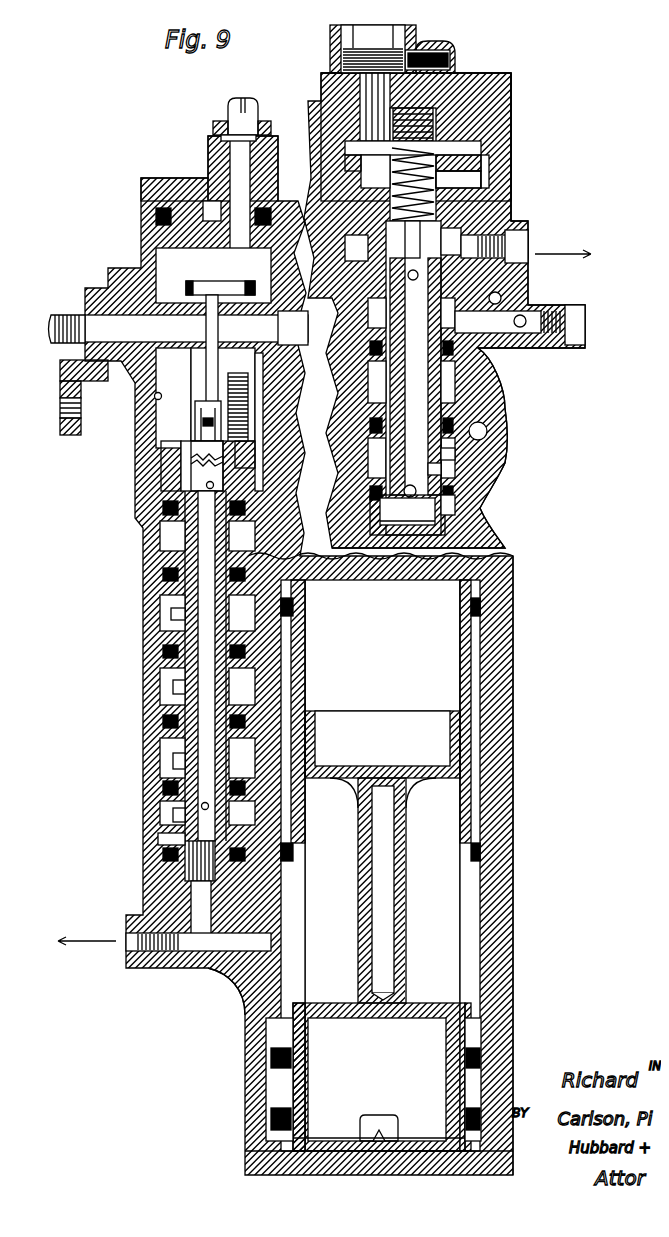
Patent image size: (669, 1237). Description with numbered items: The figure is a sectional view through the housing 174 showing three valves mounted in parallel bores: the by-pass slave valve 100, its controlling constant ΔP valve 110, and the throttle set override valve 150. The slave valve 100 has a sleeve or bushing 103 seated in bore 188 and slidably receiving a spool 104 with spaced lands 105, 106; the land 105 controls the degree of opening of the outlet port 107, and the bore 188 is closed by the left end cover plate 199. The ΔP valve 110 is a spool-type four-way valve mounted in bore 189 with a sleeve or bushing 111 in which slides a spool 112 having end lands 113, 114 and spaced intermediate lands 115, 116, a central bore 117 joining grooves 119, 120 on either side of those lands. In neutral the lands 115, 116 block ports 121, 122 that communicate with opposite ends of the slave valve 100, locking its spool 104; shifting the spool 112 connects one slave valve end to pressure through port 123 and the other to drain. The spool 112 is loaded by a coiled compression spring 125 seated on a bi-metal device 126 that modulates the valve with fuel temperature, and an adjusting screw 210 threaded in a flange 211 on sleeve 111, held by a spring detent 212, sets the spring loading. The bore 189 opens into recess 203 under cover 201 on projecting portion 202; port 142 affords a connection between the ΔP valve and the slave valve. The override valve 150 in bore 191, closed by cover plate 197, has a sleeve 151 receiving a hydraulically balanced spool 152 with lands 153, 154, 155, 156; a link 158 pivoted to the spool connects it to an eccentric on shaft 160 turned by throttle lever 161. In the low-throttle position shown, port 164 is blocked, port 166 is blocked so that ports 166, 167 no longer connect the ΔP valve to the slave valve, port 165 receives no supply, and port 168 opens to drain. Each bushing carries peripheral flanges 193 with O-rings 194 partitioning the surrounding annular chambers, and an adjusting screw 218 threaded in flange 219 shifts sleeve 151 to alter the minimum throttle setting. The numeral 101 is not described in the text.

The by-pass slave valve 100 is at (480, 936).
The cylinder bore 101 is at (470, 760).
The sleeve or bushing 103 is at (460, 690).
The spool 104 is at (386, 890).
The land 105 is at (290, 1030).
The land 106 is at (445, 725).
The outlet port 107 is at (225, 972).
The constant ΔP valve 110 is at (478, 376).
The sleeve or bushing 111 is at (447, 395).
The spool 112 is at (450, 352).
The end land 113 is at (440, 500).
The end land 114 is at (460, 230).
The intermediate land 115 is at (440, 460).
The intermediate land 116 is at (462, 340).
The central bore 117 is at (400, 388).
The groove 119 is at (436, 470).
The groove 120 is at (520, 250).
The port 121 is at (470, 1082).
The port 122 is at (365, 302).
The port 123 is at (365, 365).
The coiled compression spring 125 is at (478, 168).
The bi-metal device 126 is at (430, 110).
The port 142 is at (470, 568).
The throttle set override valve 150 is at (135, 630).
The sleeve or bushing 151 is at (165, 808).
The spool 152 is at (175, 595).
The land 153 is at (160, 835).
The land 154 is at (165, 770).
The land 155 is at (175, 680).
The land 156 is at (185, 538).
The link 158 is at (198, 375).
The shaft 160 is at (122, 276).
The throttle lever 161 is at (52, 362).
The port 164 is at (160, 670).
The port 165 is at (157, 735).
The port 166 is at (152, 525).
The port 167 is at (155, 610).
The port 168 is at (155, 790).
The housing 174 is at (312, 186).
The bore 188 is at (470, 895).
The bore 189 is at (440, 520).
The bore 191 is at (146, 390).
The peripheral flange 193 is at (155, 500).
The O-ring 194 is at (155, 495).
The cover plate 197 is at (135, 176).
The cover plate 199 is at (237, 1150).
The cover 201 is at (500, 80).
The projecting portion 202 is at (500, 105).
The recess 203 is at (478, 150).
The adjusting screw 210 is at (335, 50).
The flange 211 is at (478, 158).
The spring detent 212 is at (408, 38).
The adjusting screw 218 is at (222, 100).
The flange 219 is at (163, 433).